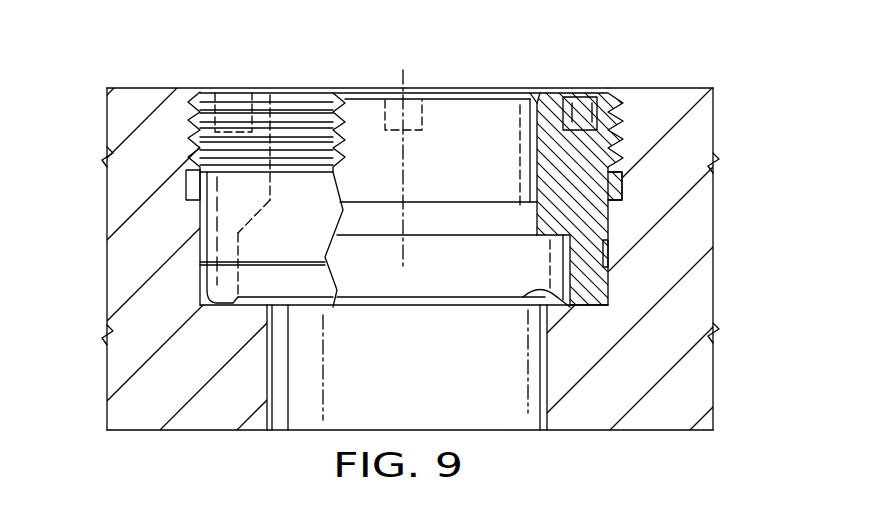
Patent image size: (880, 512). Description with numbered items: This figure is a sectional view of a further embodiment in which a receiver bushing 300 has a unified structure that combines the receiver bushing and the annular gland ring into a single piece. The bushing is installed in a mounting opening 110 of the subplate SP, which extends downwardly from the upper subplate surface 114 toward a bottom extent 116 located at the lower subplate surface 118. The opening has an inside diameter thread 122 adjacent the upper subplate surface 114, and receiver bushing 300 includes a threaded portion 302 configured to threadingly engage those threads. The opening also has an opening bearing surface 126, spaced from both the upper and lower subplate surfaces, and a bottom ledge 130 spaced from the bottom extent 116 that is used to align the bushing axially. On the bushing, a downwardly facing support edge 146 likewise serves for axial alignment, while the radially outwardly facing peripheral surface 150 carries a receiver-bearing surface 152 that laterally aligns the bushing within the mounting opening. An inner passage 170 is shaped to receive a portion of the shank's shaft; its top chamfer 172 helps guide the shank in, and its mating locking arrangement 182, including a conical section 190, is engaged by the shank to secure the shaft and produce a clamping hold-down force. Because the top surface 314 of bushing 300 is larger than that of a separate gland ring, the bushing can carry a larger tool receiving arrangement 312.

The mounting opening 110 is at (229, 80).
The upper subplate surface 114 is at (670, 88).
The bottom extent 116 is at (512, 432).
The lower subplate surface 118 is at (648, 430).
The inside diameter thread 122 is at (210, 90).
The opening bearing surface 126 is at (612, 232).
The bottom ledge 130 is at (530, 290).
The support edge 146 is at (587, 307).
The peripheral surface 150 is at (197, 227).
The receiver-bearing surface 152 is at (690, 200).
The inner passage 170 is at (533, 148).
The top chamfer 172 is at (537, 100).
The mating locking arrangement 182 is at (543, 223).
The conical section 190 is at (530, 207).
The receiver bushing 300 is at (552, 82).
The threaded portion 302 is at (300, 113).
The tool receiving arrangement 312 is at (418, 88).
The top surface 314 is at (318, 92).
The subplate SP is at (643, 88).